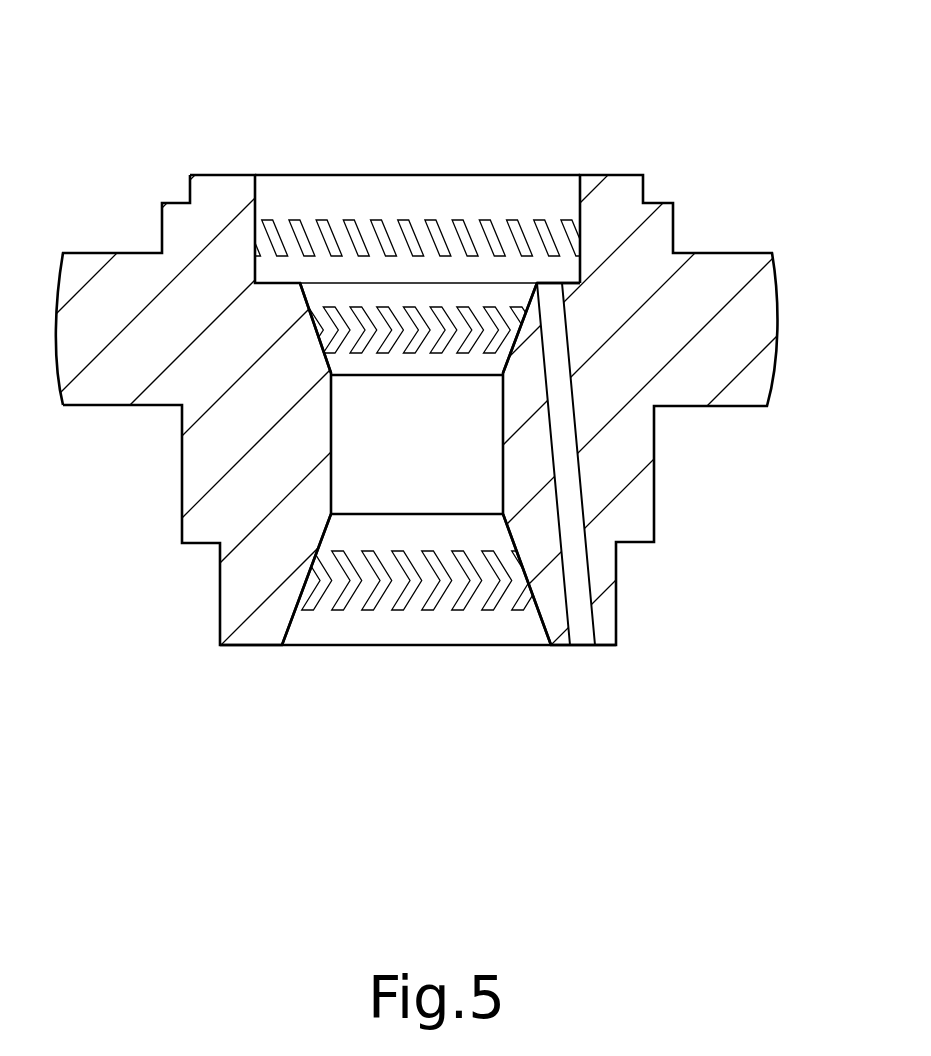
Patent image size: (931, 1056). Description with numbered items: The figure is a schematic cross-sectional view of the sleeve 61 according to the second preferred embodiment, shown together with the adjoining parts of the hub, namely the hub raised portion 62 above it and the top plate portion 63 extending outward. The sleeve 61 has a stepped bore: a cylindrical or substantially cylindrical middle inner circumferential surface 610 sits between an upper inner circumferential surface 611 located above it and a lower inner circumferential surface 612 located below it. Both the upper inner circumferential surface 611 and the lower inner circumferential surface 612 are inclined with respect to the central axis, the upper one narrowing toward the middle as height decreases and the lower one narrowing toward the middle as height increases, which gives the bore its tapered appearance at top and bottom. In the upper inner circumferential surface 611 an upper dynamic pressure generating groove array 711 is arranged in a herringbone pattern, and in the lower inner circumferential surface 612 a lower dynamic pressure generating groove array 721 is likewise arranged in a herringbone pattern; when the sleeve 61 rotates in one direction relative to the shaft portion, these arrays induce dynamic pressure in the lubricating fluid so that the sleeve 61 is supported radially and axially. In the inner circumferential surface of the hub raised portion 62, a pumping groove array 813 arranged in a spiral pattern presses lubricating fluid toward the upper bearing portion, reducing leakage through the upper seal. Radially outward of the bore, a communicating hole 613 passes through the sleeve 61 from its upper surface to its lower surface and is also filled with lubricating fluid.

The sleeve 61 is at (273, 458).
The hub raised portion 62 is at (615, 220).
The top plate portion 63 is at (108, 300).
The middle inner circumferential surface 610 is at (442, 448).
The upper inner circumferential surface 611 is at (375, 300).
The lower inner circumferential surface 612 is at (360, 620).
The communicating hole 613 is at (557, 351).
The upper dynamic pressure generating groove array 711 is at (432, 305).
The lower dynamic pressure generating groove array 721 is at (410, 593).
The pumping groove array 813 is at (527, 237).